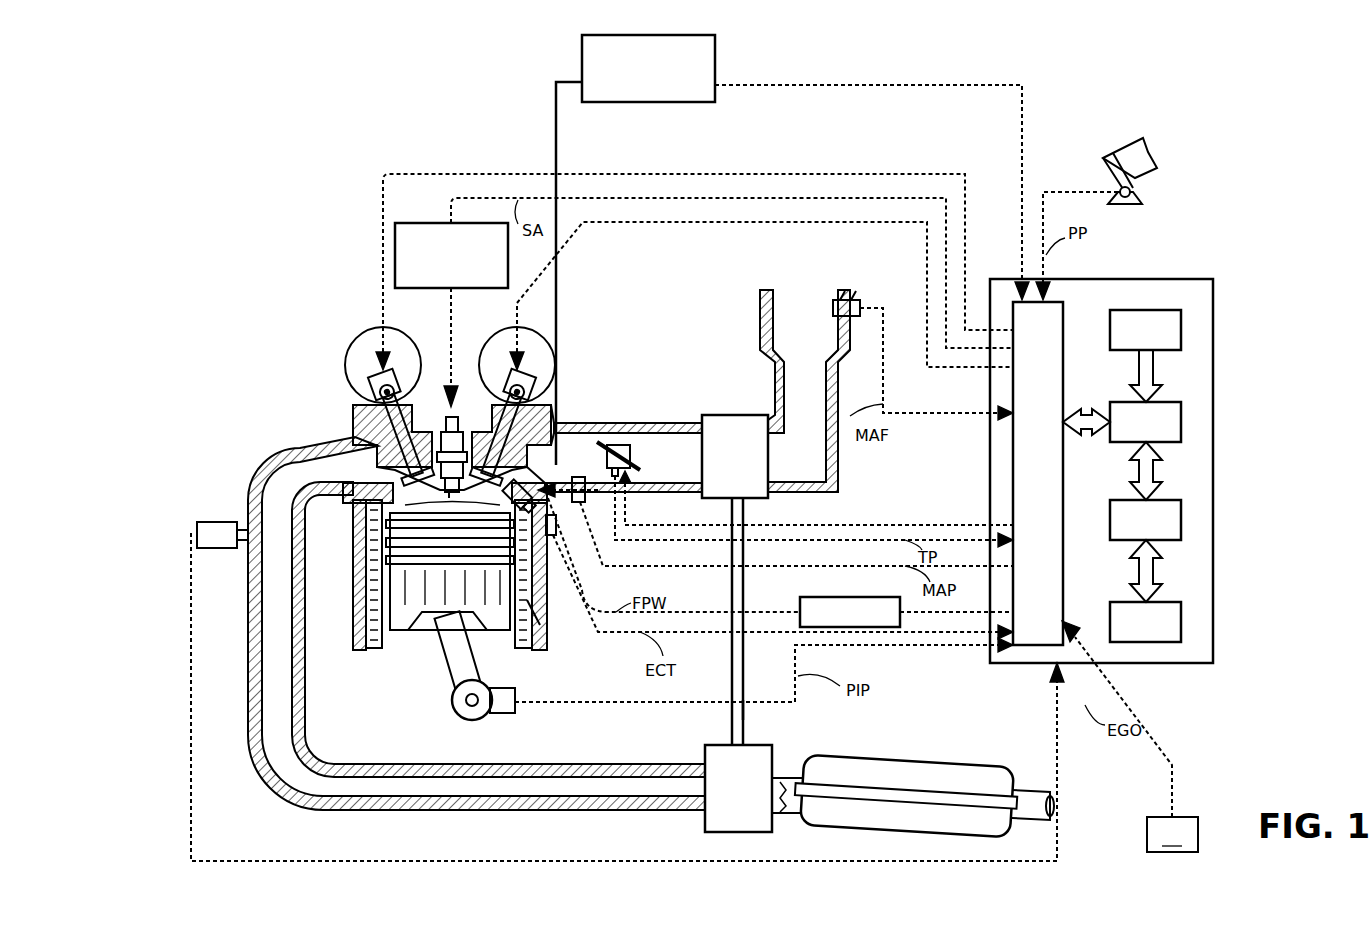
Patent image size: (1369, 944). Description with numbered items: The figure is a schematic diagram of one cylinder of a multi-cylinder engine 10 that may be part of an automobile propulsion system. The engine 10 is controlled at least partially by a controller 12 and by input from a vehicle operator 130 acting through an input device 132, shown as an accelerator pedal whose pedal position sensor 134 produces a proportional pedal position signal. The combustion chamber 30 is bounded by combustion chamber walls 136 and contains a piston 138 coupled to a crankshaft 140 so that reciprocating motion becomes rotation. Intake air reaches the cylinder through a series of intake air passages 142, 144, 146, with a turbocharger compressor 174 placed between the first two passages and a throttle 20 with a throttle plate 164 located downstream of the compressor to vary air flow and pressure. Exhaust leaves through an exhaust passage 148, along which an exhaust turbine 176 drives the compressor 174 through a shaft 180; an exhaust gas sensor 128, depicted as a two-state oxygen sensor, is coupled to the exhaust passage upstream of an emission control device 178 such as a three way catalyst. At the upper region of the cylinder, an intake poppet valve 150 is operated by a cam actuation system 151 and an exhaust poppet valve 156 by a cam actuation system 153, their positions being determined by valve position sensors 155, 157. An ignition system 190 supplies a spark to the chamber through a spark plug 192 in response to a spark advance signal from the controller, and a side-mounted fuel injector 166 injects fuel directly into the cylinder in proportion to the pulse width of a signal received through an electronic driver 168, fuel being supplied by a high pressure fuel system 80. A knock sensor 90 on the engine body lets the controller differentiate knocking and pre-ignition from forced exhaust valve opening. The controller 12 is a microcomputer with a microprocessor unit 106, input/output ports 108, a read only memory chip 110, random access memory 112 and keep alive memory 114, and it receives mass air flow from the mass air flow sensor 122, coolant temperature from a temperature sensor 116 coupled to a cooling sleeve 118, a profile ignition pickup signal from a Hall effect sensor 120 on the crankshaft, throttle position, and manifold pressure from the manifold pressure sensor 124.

The engine 10 is at (180, 111).
The controller 12 is at (1141, 460).
The throttle 20 is at (618, 445).
The combustion chamber 30 is at (353, 522).
The fuel system 80 is at (715, 47).
The knock sensor 90 is at (1130, 736).
The microprocessor unit 106 is at (1183, 422).
The input/output ports 108 is at (1065, 304).
The read only memory chip 110 is at (1183, 330).
The random access memory 112 is at (1183, 522).
The keep alive memory 114 is at (1183, 622).
The temperature sensor 116 is at (553, 537).
The cooling sleeve 118 is at (530, 612).
The Hall effect sensor 120 is at (507, 715).
The mass air flow sensor 122 is at (854, 298).
The manifold pressure sensor 124 is at (583, 503).
The exhaust gas sensor 128 is at (195, 525).
The vehicle operator 130 is at (1162, 152).
The input device 132 is at (1105, 165).
The pedal position sensor 134 is at (1140, 194).
The combustion chamber walls 136 is at (378, 652).
The piston 138 is at (437, 600).
The crankshaft 140 is at (462, 718).
The intake air passage 142 is at (822, 332).
The intake air passage 144 is at (689, 463).
The intake air passage 146 is at (592, 463).
The exhaust passage 148 is at (341, 471).
The intake poppet valve 150 is at (485, 470).
The cam actuation system 151 is at (517, 352).
The cam actuation system 153 is at (383, 352).
The valve position sensor 155 is at (533, 385).
The exhaust poppet valve 156 is at (410, 470).
The valve position sensor 157 is at (372, 385).
The throttle plate 164 is at (597, 442).
The fuel injector 166 is at (514, 490).
The electronic driver 168 is at (802, 600).
The compressor 174 is at (735, 415).
The exhaust turbine 176 is at (705, 820).
The emission control device 178 is at (972, 762).
The shaft 180 is at (745, 712).
The ignition system 190 is at (410, 223).
The spark plug 192 is at (446, 440).